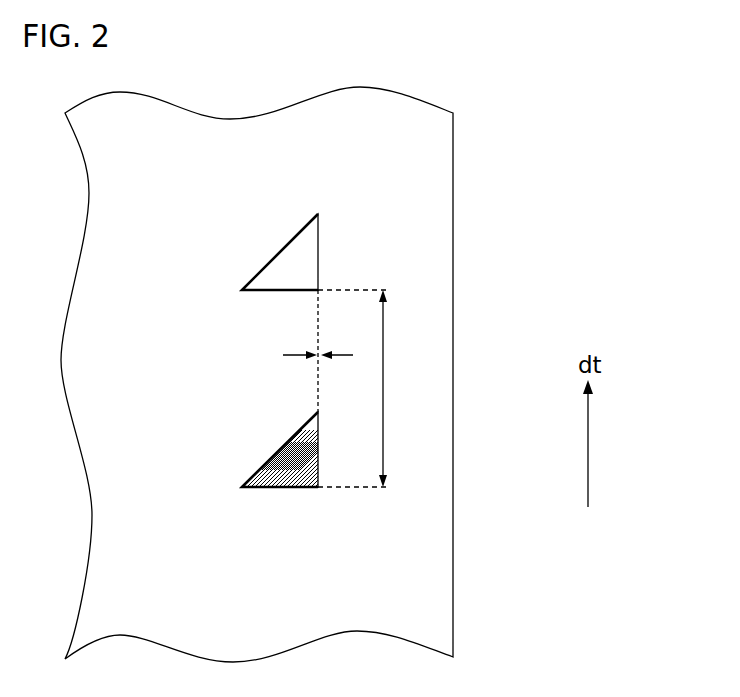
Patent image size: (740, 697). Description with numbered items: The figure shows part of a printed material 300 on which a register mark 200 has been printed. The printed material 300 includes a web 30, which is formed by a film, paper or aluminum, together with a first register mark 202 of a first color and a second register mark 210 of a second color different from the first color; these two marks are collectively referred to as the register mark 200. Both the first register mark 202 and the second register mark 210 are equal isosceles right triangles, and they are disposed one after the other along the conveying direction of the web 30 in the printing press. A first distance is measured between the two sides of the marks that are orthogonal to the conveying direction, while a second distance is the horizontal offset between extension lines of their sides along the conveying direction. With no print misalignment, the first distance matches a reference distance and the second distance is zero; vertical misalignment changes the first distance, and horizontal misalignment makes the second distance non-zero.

The web 30 is at (453, 158).
The printed material 300 is at (618, 163).
The register mark 200 is at (323, 353).
The first register mark 202 is at (282, 250).
The second register mark 210 is at (280, 450).